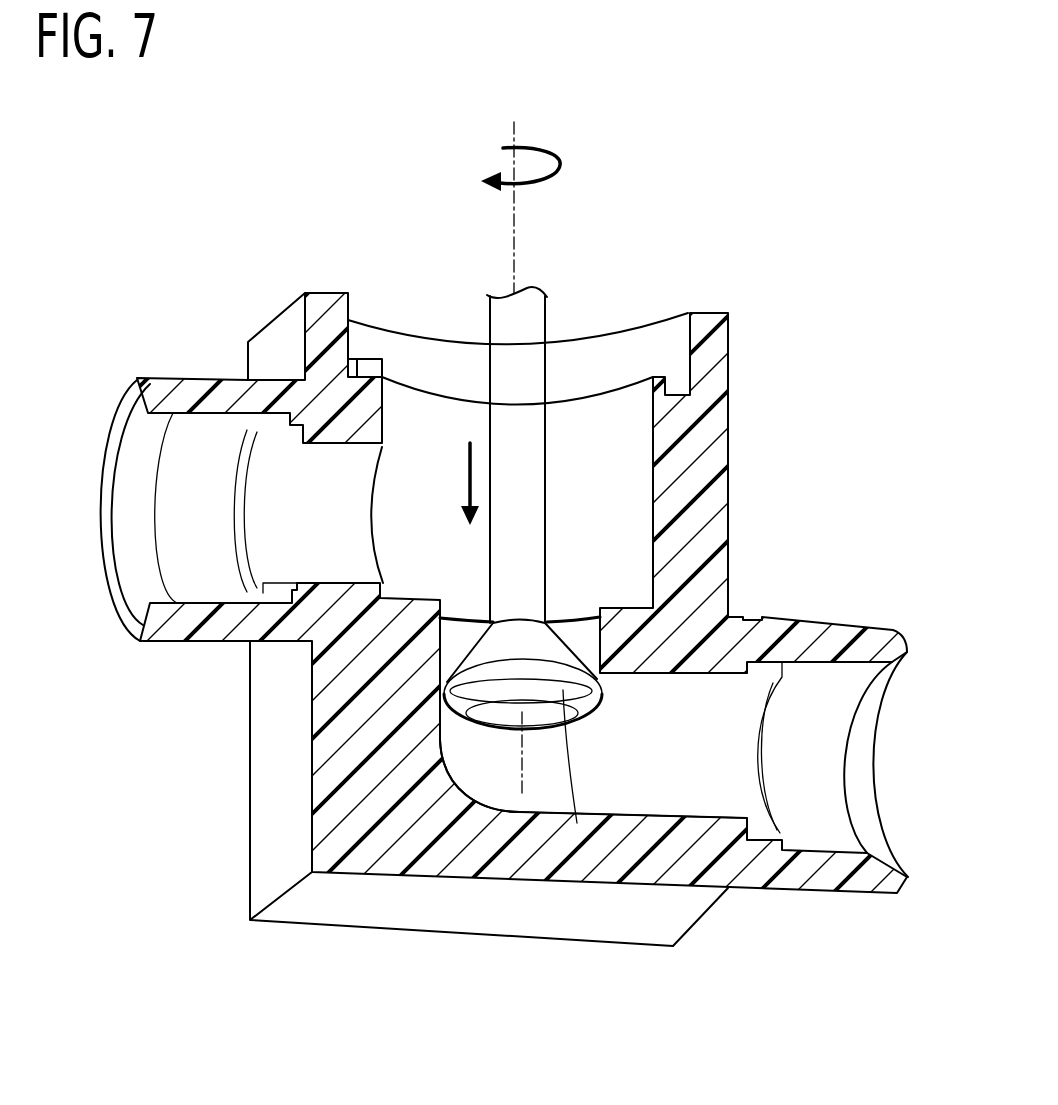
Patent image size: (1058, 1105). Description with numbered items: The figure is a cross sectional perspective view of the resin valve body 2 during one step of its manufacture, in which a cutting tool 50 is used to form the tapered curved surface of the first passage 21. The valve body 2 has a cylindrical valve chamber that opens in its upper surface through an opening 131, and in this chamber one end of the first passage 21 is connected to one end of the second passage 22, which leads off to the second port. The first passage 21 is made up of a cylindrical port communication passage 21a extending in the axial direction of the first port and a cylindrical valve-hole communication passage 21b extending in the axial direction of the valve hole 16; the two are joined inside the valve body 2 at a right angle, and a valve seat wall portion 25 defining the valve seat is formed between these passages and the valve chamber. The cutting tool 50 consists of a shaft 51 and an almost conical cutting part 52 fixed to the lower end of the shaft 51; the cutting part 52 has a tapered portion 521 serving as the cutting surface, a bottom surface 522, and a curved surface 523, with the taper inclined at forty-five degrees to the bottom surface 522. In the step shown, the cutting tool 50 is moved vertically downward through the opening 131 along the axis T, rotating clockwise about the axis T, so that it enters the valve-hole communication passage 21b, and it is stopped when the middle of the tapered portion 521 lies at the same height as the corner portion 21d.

The valve body 2 is at (338, 252).
The axis T is at (514, 130).
The opening 131 is at (627, 390).
The valve hole 16 is at (442, 597).
The second passage 22 is at (132, 587).
The valve seat wall portion 25 is at (617, 632).
The cutting tool 50 is at (668, 484).
The shaft 51 is at (528, 443).
The cutting part 52 is at (551, 644).
The tapered portion 521 is at (493, 648).
The curved surface 523 is at (446, 690).
The bottom surface 522 is at (487, 737).
The first passage 21 is at (593, 874).
The valve-hole communication passage 21b is at (488, 712).
The corner portion 21d is at (542, 723).
The port communication passage 21a is at (637, 770).